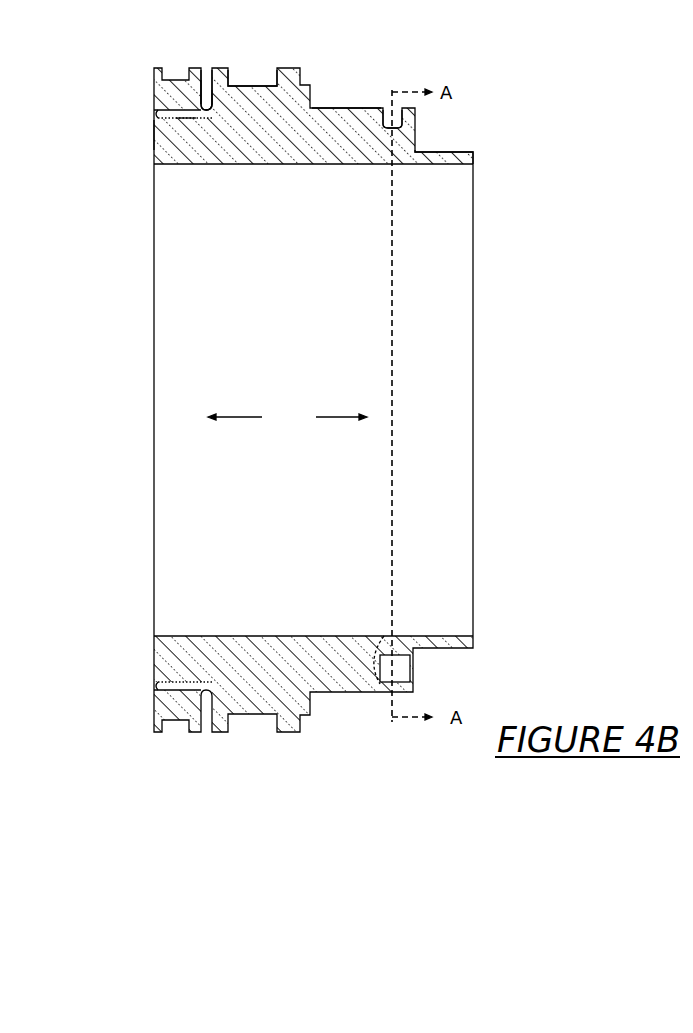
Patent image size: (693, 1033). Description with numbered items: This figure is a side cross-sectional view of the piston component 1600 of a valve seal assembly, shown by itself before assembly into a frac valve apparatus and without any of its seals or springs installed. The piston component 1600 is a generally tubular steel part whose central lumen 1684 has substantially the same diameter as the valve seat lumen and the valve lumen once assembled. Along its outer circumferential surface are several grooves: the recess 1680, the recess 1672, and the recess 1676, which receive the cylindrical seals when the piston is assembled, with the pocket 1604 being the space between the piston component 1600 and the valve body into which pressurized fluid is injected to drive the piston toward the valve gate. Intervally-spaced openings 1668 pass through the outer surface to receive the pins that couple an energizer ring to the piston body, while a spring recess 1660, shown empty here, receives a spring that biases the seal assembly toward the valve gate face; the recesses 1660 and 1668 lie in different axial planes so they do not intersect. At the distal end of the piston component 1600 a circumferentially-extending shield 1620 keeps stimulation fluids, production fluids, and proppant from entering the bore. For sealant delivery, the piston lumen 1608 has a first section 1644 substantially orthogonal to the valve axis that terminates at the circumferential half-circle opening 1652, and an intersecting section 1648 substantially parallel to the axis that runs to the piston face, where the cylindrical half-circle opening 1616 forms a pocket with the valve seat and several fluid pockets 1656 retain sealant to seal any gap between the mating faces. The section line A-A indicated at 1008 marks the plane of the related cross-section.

The piston component 1600 is at (353, 164).
The pocket 1604 is at (309, 72).
The piston lumen 1608 is at (208, 117).
The cylindrical half-circle opening 1616 is at (153, 118).
The shield 1620 is at (455, 152).
The first section 1644 is at (205, 92).
The intersecting section 1648 is at (184, 118).
The circumferential half-circle opening 1652 is at (204, 74).
The fluid pockets 1656 is at (153, 122).
The spring recess 1660 is at (381, 660).
The openings 1668 is at (390, 127).
The recess 1672 is at (252, 87).
The recess 1676 is at (340, 108).
The recess 1680 is at (177, 82).
The lumen 1684 is at (287, 418).
The lower flange 1008 is at (387, 645).